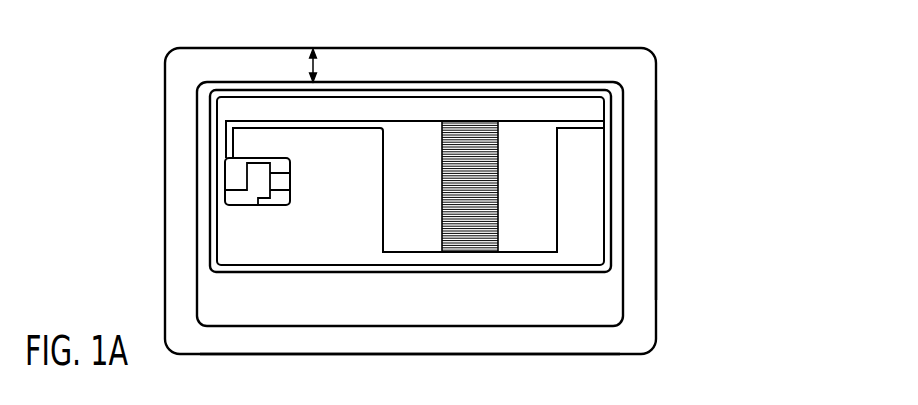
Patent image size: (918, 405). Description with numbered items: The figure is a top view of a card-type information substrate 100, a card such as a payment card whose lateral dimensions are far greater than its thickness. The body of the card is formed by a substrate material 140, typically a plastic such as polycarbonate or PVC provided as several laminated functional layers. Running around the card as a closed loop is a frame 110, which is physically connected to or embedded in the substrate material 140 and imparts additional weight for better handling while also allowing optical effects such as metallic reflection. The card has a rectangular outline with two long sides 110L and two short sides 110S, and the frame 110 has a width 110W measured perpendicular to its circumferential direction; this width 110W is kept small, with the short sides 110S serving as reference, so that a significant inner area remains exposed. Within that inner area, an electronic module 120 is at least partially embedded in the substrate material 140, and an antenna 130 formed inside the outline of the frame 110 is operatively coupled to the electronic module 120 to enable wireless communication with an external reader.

The card-type information substrate 100 is at (703, 57).
The frame 110 is at (657, 124).
The long sides 110L is at (327, 354).
The short sides 110S is at (625, 158).
The width 110W is at (313, 66).
The electronic module 120 is at (258, 163).
The antenna 130 is at (543, 82).
The substrate material 140 is at (593, 277).